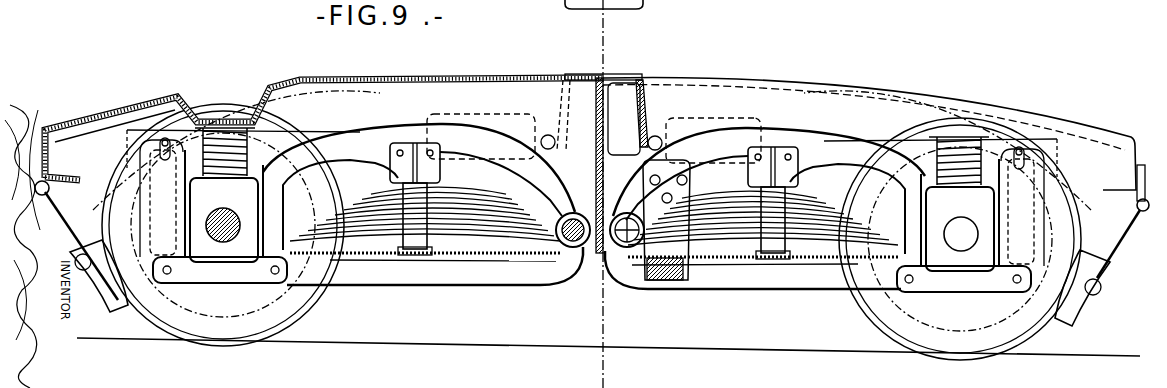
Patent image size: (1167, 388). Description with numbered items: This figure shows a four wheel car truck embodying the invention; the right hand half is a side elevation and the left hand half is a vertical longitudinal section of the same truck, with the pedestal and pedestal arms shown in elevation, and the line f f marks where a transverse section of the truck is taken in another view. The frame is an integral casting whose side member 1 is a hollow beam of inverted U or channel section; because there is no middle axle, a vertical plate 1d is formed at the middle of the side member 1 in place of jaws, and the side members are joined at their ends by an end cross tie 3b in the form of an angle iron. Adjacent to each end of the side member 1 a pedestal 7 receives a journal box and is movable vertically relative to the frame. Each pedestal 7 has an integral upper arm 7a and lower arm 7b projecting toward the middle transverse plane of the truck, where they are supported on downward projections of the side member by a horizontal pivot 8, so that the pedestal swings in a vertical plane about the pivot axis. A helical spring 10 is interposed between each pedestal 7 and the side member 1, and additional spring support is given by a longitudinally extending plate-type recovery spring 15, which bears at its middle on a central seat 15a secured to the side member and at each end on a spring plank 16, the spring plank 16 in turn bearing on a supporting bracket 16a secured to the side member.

The side member 1 is at (340, 78).
The vertical plate 1d is at (552, 150).
The end cross tie 3b is at (42, 128).
The pedestal 7 is at (280, 180).
The upper arm 7a is at (393, 140).
The lower arm 7b is at (517, 282).
The horizontal pivot 8 is at (576, 213).
The helical spring 10 is at (260, 130).
The recovery spring 15 is at (452, 215).
The central seat 15a is at (392, 182).
The spring plank 16 is at (397, 255).
The supporting bracket 16a is at (653, 280).
The section line f f is at (776, 12).